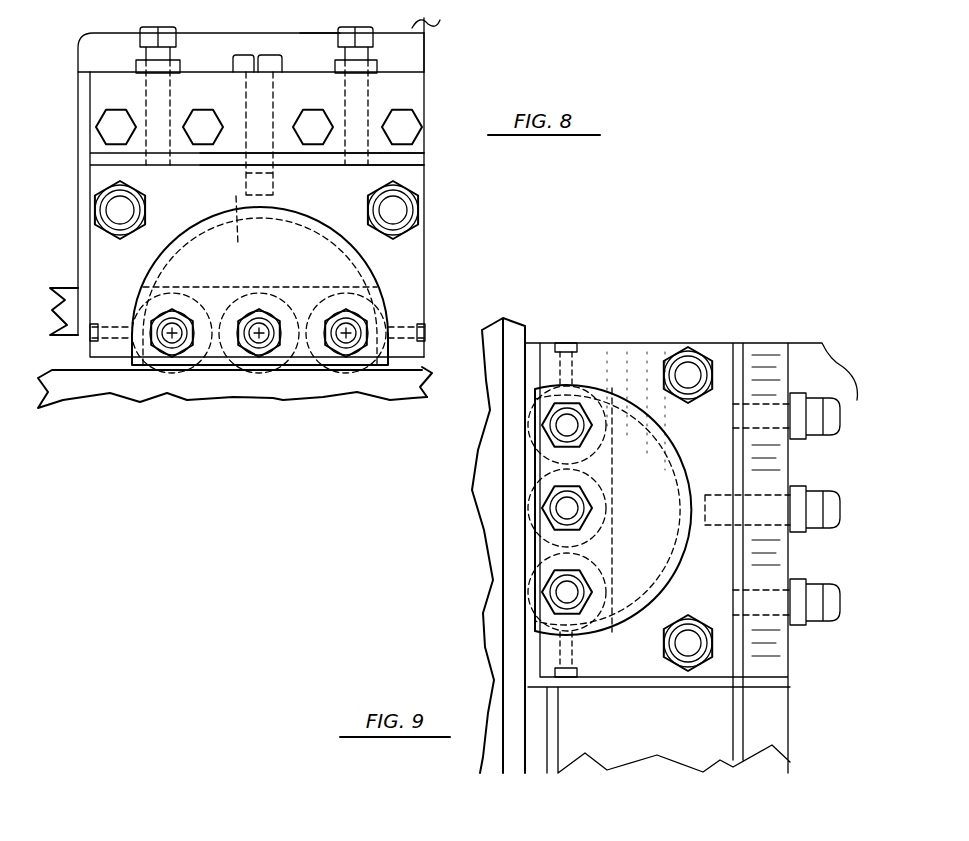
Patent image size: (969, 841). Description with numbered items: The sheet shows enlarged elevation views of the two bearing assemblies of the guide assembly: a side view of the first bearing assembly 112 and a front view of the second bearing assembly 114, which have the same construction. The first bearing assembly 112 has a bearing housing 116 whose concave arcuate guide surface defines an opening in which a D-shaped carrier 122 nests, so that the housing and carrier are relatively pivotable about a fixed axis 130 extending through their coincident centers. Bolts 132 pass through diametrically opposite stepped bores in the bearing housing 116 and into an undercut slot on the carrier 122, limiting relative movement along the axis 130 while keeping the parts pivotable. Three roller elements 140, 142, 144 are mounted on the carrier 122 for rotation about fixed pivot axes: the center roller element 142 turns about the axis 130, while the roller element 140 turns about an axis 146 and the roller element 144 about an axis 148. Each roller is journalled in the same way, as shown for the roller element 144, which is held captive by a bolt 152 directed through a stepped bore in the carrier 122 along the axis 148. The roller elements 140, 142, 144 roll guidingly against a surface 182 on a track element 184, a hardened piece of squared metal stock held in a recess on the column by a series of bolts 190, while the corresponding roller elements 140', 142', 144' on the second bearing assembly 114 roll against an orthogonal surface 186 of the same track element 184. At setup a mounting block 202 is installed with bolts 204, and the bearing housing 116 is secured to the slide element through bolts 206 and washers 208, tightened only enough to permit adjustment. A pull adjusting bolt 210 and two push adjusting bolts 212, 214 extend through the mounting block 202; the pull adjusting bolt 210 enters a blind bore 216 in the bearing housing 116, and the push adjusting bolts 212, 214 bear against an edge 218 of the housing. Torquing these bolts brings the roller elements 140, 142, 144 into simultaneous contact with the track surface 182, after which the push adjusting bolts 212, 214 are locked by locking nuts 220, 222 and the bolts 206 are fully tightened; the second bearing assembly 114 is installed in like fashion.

In FIG. 8, the first bearing assembly 112 is at (436, 244).
In FIG. 8, the second bearing assembly 114 is at (430, 0).
In FIG. 9, the second bearing assembly 114 is at (654, 336).
In FIG. 8, the bearing housing 116 is at (407, 268).
In FIG. 8, the D-shaped carrier 122 is at (201, 272).
In FIG. 8, the axis 130 is at (270, 342).
In FIG. 8, the bolts 132 is at (100, 330).
In FIG. 8, the roller element 140 is at (178, 373).
In FIG. 8, the center roller element 142 is at (259, 371).
In FIG. 8, the roller element 144 is at (348, 362).
In FIG. 8, the axis 146 is at (165, 345).
In FIG. 8, the axis 148 is at (345, 330).
In FIG. 8, the bolt 152 is at (432, 240).
In FIG. 8, the surface 182 is at (428, 366).
In FIG. 8, the track element 184 is at (83, 378).
In FIG. 9, the orthogonal surface 186 is at (528, 337).
In FIG. 8, the bolts 190 is at (307, 16).
In FIG. 8, the mounting block 202 is at (417, 100).
In FIG. 8, the bolts 204 is at (112, 126).
In FIG. 8, the bolts 206 is at (118, 207).
In FIG. 9, the bolts 206 is at (693, 377).
In FIG. 8, the washers 208 is at (114, 206).
In FIG. 9, the washers 208 is at (712, 365).
In FIG. 8, the pull adjusting bolt 210 is at (259, 58).
In FIG. 8, the push adjusting bolt 212 is at (148, 33).
In FIG. 8, the push adjusting bolt 214 is at (350, 33).
In FIG. 8, the blind bore 216 is at (238, 233).
In FIG. 8, the edge 218 is at (312, 158).
In FIG. 8, the locking nut 220 is at (180, 70).
In FIG. 8, the locking nut 222 is at (424, 49).
In FIG. 9, the roller element 140' is at (513, 425).
In FIG. 9, the roller element 142' is at (513, 511).
In FIG. 9, the roller element 144' is at (514, 599).